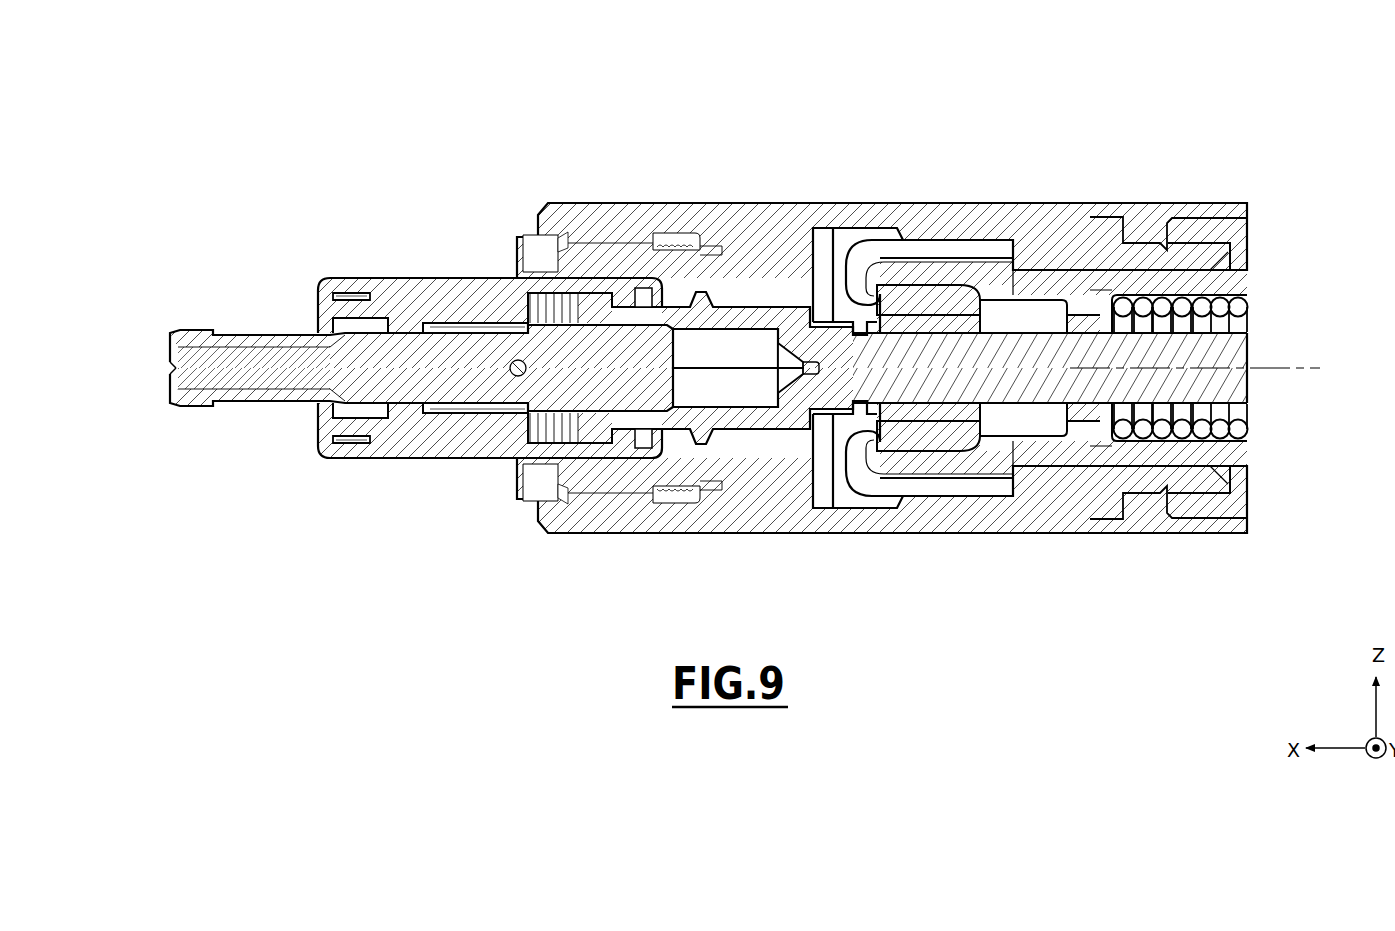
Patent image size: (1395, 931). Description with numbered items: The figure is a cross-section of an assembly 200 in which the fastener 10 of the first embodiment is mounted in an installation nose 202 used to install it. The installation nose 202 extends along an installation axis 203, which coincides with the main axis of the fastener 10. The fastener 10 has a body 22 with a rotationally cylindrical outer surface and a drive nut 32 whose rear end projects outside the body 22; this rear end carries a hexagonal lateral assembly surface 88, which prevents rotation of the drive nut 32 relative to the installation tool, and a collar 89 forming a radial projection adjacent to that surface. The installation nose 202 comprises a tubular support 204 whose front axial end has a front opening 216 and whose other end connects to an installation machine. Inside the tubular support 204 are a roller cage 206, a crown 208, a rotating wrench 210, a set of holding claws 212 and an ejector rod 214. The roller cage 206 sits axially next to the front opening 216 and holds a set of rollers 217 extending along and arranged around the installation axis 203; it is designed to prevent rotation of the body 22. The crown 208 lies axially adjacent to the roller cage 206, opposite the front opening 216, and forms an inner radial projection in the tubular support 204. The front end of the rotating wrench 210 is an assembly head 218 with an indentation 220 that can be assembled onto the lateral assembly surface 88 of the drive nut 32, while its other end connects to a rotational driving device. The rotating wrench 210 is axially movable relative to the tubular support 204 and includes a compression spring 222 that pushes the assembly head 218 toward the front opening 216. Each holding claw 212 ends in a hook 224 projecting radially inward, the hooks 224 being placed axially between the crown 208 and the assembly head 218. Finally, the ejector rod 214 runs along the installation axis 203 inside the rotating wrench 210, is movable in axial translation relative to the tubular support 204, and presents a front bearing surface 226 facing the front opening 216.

The fastener 10 is at (128, 120).
The body 22 is at (401, 278).
The drive nut 32 is at (726, 400).
The lateral assembly surface 88 is at (756, 316).
The collar 89 is at (700, 292).
The assembly 200 is at (230, 612).
The installation nose 202 is at (1180, 130).
The installation axis 203 is at (1311, 366).
The tubular support 204 is at (1122, 515).
The roller cage 206 is at (633, 250).
The crown 208 is at (822, 468).
The rotating wrench 210 is at (1206, 268).
The holding claws 212 is at (993, 474).
The ejector rod 214 is at (1033, 360).
The front opening 216 is at (508, 474).
The rollers 217 is at (618, 470).
The assembly head 218 is at (905, 295).
The indentation 220 is at (962, 320).
The compression spring 222 is at (1228, 430).
The hook 224 is at (861, 450).
The front bearing surface 226 is at (765, 398).